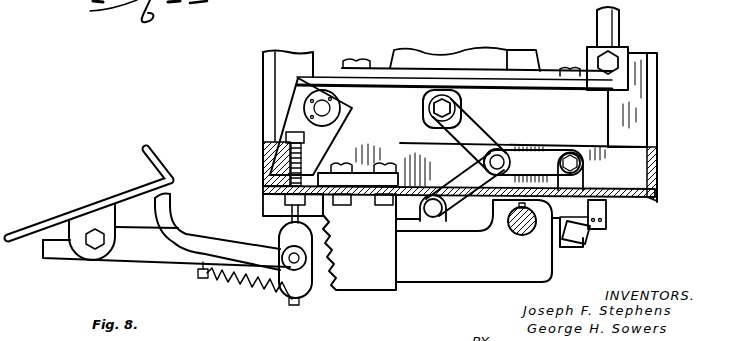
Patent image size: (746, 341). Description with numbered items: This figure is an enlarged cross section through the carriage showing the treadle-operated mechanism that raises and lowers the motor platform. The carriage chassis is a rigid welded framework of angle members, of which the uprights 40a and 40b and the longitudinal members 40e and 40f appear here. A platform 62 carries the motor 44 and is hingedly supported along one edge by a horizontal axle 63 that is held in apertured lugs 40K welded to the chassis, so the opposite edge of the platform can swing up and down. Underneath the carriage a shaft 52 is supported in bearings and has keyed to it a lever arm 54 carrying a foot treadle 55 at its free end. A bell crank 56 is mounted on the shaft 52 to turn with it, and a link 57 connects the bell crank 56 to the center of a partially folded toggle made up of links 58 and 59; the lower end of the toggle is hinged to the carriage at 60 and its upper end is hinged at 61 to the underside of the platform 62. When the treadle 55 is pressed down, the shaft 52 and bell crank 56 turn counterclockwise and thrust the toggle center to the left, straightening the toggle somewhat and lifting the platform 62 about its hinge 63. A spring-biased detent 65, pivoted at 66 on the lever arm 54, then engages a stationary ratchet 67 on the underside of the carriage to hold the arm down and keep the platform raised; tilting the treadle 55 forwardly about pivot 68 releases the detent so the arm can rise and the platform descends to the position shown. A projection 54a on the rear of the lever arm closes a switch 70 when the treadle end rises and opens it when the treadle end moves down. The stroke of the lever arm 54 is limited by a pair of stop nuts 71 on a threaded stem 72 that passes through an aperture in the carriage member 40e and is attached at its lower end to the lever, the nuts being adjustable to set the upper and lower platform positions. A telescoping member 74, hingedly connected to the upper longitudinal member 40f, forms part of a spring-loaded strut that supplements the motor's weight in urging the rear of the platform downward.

The upright 40a is at (290, 62).
The upright 40b is at (640, 104).
The longitudinal member 40e is at (276, 171).
The longitudinal member 40f is at (655, 190).
The apertured lugs 40K is at (322, 138).
The motor 44 is at (432, 62).
The shaft 52 is at (520, 236).
The lever arm 54 is at (438, 270).
The projection 54a is at (562, 247).
The foot treadle 55 is at (62, 220).
The bell crank 56 is at (586, 172).
The link 57 is at (545, 150).
The toggle link 58 is at (470, 135).
The toggle link 59 is at (464, 178).
The hinge 60 is at (443, 208).
The hinge 61 is at (446, 107).
The platform 62 is at (505, 78).
The horizontal axle 63 is at (314, 108).
The spring-biased detent 65 is at (305, 224).
The pivot 66 is at (297, 264).
The stationary ratchet 67 is at (376, 282).
The pivot 68 is at (95, 246).
The switch 70 is at (588, 226).
The stop nuts 71 is at (286, 137).
The threaded stem 72 is at (290, 213).
The telescoping member 74 is at (606, 26).